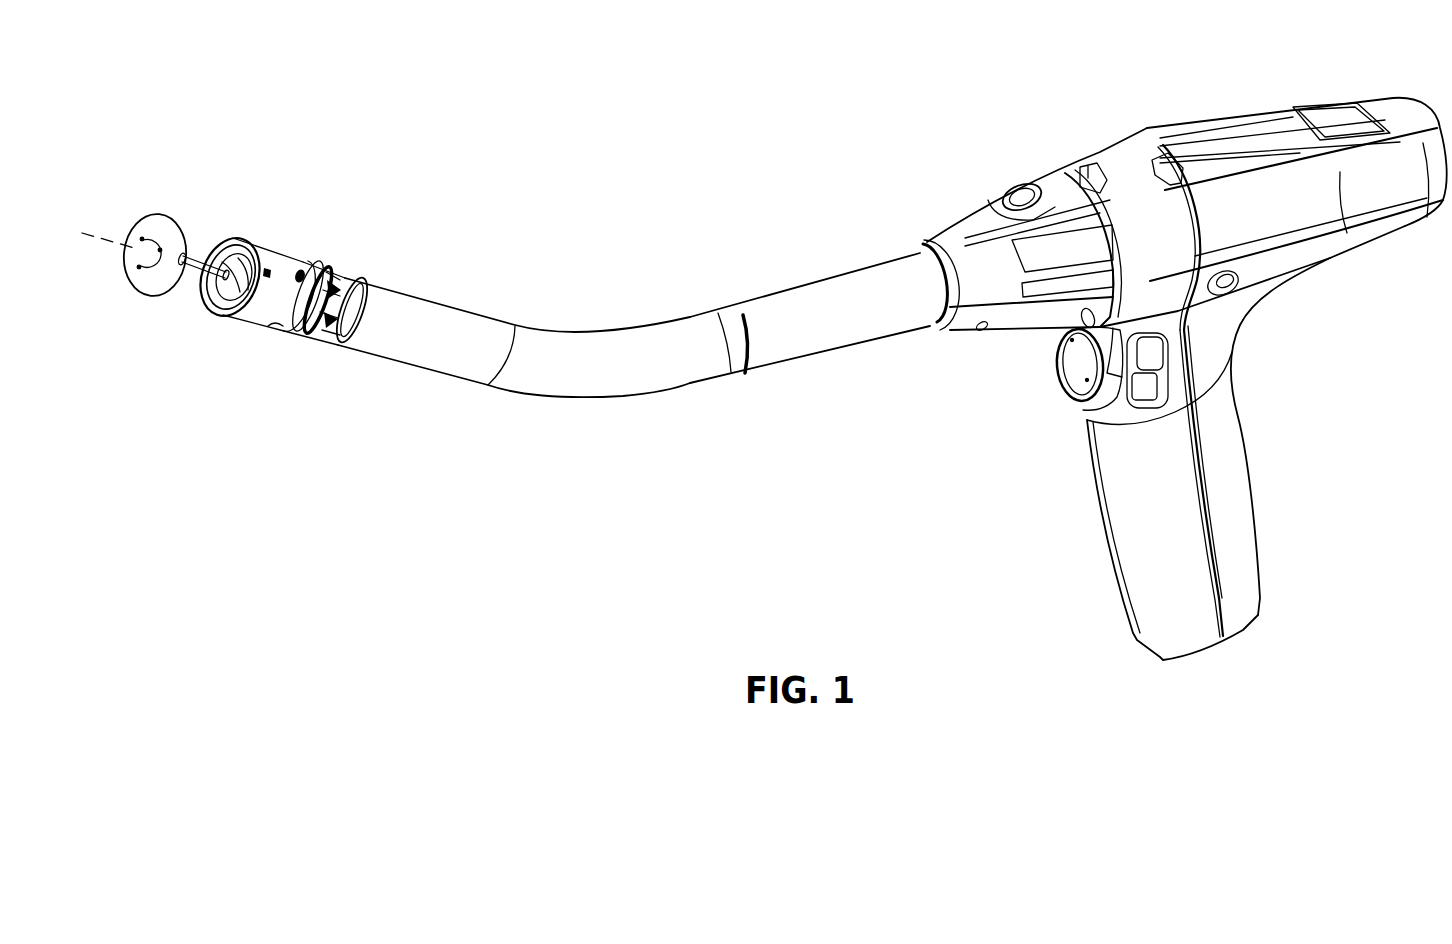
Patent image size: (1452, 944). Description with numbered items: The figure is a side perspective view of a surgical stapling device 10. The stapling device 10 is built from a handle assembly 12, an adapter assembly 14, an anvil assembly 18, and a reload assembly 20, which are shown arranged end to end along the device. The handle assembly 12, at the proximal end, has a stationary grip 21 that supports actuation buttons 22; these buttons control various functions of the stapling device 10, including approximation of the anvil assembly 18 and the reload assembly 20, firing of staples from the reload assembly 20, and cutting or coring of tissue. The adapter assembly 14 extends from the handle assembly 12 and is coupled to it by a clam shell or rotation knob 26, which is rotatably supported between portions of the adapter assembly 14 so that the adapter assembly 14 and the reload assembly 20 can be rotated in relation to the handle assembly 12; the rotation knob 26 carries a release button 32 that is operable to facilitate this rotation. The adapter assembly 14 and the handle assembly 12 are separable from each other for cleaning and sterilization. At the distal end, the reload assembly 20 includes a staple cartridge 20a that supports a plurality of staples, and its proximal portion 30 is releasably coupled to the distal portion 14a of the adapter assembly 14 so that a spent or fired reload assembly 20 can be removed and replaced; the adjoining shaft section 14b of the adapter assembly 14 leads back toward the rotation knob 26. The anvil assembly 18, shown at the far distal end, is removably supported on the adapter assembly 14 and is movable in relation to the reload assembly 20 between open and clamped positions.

The stapling device 10 is at (1050, 82).
The handle assembly 12 is at (1244, 110).
The adapter assembly 14 is at (692, 308).
The distal portion of the adapter assembly 14a is at (368, 284).
The proximal shaft portion 14b is at (883, 270).
The anvil assembly 18 is at (172, 215).
The reload assembly 20 is at (266, 230).
The staple cartridge 20a is at (226, 318).
The stationary grip 21 is at (1143, 535).
The actuation buttons 22 is at (1024, 440).
The rotation knob 26 is at (943, 238).
The proximal portion of the reload assembly 30 is at (326, 270).
The release button 32 is at (1037, 182).